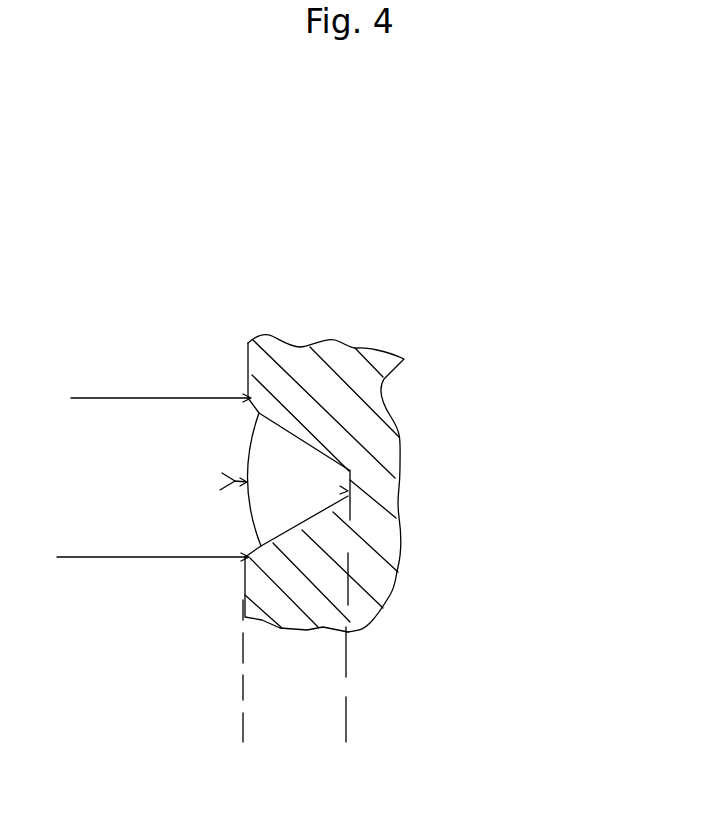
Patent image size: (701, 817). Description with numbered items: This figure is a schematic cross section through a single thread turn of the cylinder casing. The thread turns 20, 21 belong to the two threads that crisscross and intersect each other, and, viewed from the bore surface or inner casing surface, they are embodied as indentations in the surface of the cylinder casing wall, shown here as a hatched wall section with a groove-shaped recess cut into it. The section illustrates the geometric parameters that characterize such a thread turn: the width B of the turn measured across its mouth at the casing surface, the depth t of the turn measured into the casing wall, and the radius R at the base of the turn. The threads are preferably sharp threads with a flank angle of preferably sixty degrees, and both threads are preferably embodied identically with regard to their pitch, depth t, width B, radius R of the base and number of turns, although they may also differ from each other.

The thread turn 20 is at (297, 450).
The thread turn 21 is at (297, 450).
The width B is at (70, 398).
The depth t is at (346, 724).
The radius of the base R is at (348, 491).